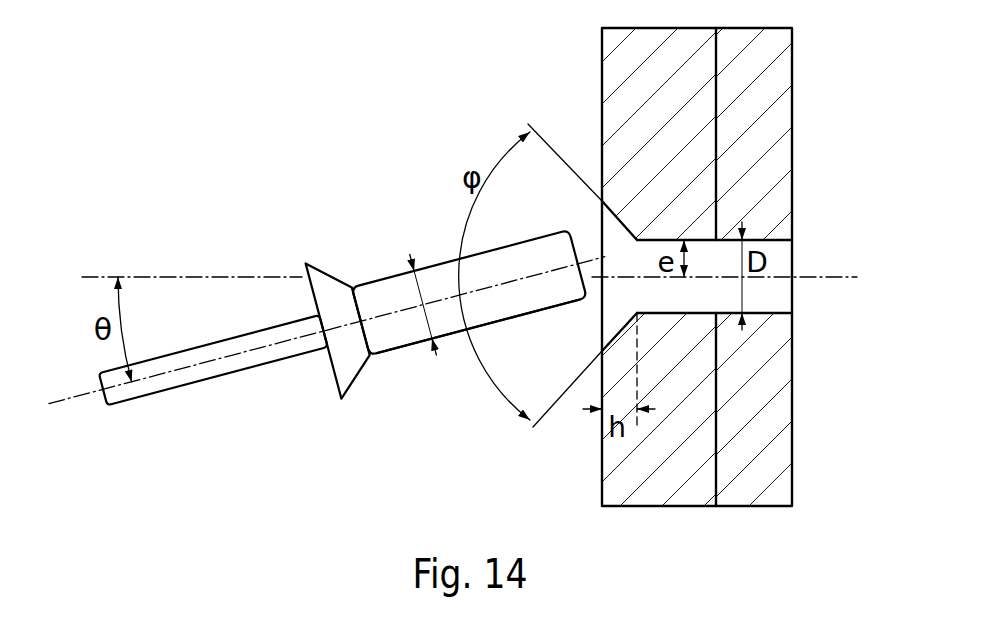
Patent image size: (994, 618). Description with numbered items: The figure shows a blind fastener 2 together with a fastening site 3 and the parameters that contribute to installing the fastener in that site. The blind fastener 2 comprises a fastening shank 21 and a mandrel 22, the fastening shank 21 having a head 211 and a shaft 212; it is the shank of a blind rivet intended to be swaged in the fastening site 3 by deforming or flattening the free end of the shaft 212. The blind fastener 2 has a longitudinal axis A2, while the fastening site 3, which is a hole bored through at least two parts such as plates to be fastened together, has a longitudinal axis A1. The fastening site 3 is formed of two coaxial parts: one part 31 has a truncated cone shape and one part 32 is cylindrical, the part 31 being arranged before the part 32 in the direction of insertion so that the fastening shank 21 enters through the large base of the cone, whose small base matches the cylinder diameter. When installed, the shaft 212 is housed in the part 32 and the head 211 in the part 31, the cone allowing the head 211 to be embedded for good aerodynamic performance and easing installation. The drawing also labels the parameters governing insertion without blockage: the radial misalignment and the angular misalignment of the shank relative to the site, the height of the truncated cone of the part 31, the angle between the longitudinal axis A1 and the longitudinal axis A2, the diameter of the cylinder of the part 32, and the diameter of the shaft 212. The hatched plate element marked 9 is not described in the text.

The blind fastener 2 is at (343, 298).
The fastening shank 21 is at (437, 262).
The mandrel 22 is at (203, 350).
The head 211 is at (350, 388).
The shaft 212 is at (498, 307).
The plate 9 is at (602, 105).
The fastening site 3 is at (792, 247).
The truncated cone part 31 is at (618, 217).
The cylindrical part 32 is at (757, 300).
The longitudinal axis of the fastening site A1 is at (848, 278).
The longitudinal axis of the blind fastener A2 is at (68, 400).